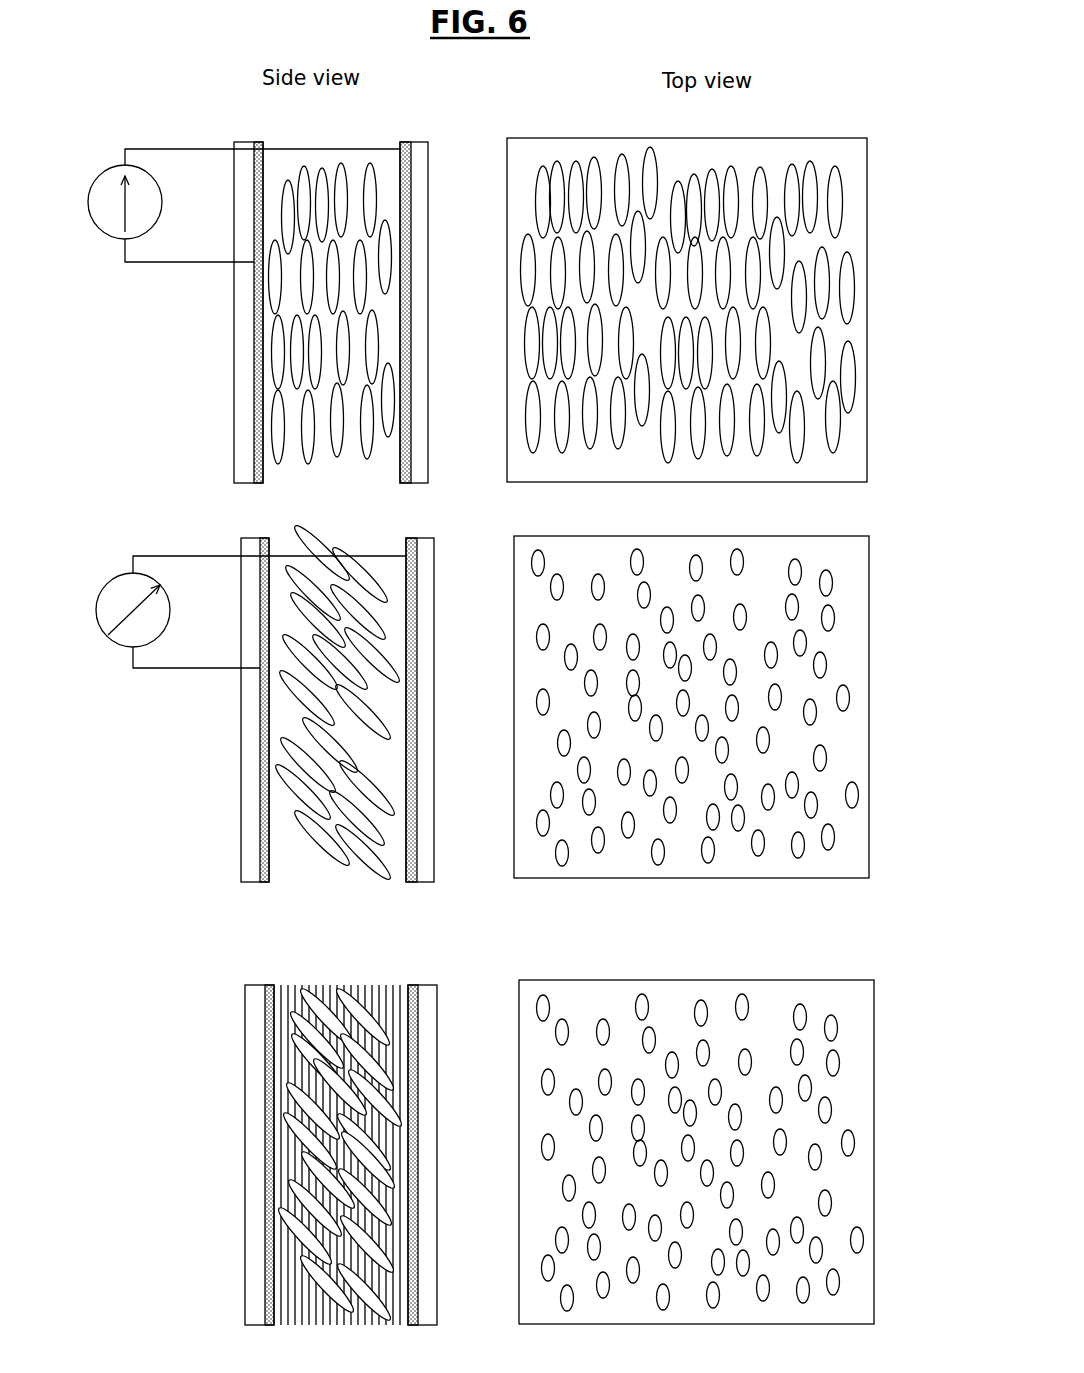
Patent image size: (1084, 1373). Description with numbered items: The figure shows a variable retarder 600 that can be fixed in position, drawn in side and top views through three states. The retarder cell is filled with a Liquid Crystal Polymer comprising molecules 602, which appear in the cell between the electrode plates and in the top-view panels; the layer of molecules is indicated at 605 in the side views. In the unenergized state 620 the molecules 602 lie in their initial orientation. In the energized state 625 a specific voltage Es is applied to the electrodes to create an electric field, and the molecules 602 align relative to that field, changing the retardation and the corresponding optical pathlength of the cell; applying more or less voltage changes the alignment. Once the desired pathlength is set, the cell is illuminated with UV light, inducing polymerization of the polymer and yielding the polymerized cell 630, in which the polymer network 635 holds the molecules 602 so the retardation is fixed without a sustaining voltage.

The variable retarder 600 is at (527, 122).
The molecules 602 is at (618, 289).
The liquid crystal layer 605 is at (327, 465).
The unenergized state 620 is at (471, 310).
The energized state 625 is at (482, 709).
The polymerized cell 630 is at (485, 1152).
The polymer network 635 is at (368, 993).